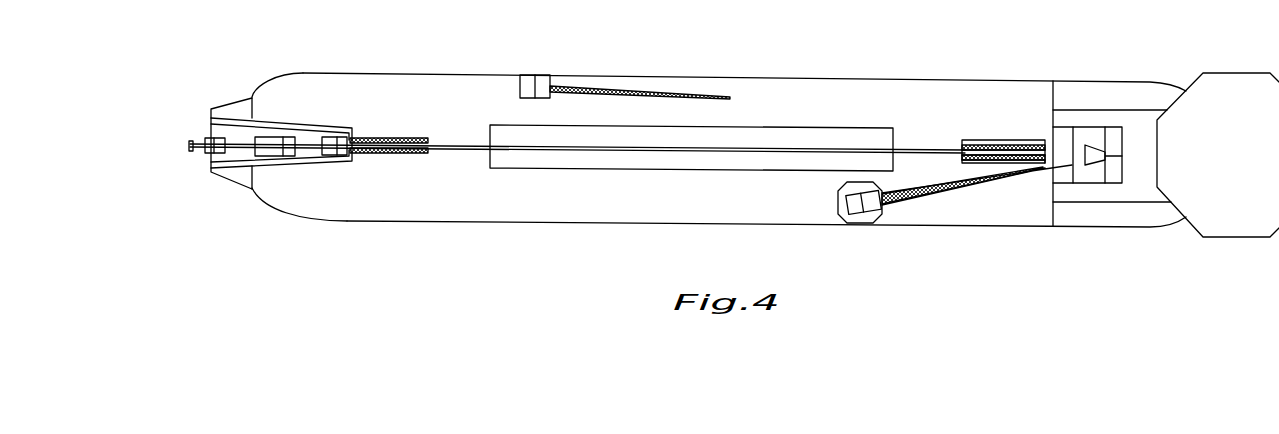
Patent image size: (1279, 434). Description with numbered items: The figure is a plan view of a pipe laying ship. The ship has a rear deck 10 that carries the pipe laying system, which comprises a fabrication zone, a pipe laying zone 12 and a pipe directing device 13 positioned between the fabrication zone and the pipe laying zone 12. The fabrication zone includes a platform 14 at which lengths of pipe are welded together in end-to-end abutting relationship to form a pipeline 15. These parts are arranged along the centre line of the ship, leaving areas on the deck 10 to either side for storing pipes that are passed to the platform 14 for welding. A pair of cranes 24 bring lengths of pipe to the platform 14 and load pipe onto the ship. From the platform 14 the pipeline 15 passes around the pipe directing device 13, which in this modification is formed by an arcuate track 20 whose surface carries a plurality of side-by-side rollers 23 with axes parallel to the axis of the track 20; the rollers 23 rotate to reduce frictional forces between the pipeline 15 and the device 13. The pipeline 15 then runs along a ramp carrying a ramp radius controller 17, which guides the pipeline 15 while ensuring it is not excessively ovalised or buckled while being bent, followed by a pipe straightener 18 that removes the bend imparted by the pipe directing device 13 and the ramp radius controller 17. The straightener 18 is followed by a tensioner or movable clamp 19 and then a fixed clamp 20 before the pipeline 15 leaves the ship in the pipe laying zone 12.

The rear deck 10 is at (795, 198).
The pipe laying zone 12 is at (280, 180).
The pipe directing device 13 is at (1011, 130).
The platform 14 is at (625, 163).
The pipeline 15 is at (522, 150).
The ramp radius controller 17 is at (398, 140).
The pipe straightener 18 is at (330, 137).
The tensioner or movable clamp 19 is at (277, 137).
The fixed clamp 20 is at (210, 140).
The rollers 23 is at (997, 163).
The cranes 24 is at (613, 92).